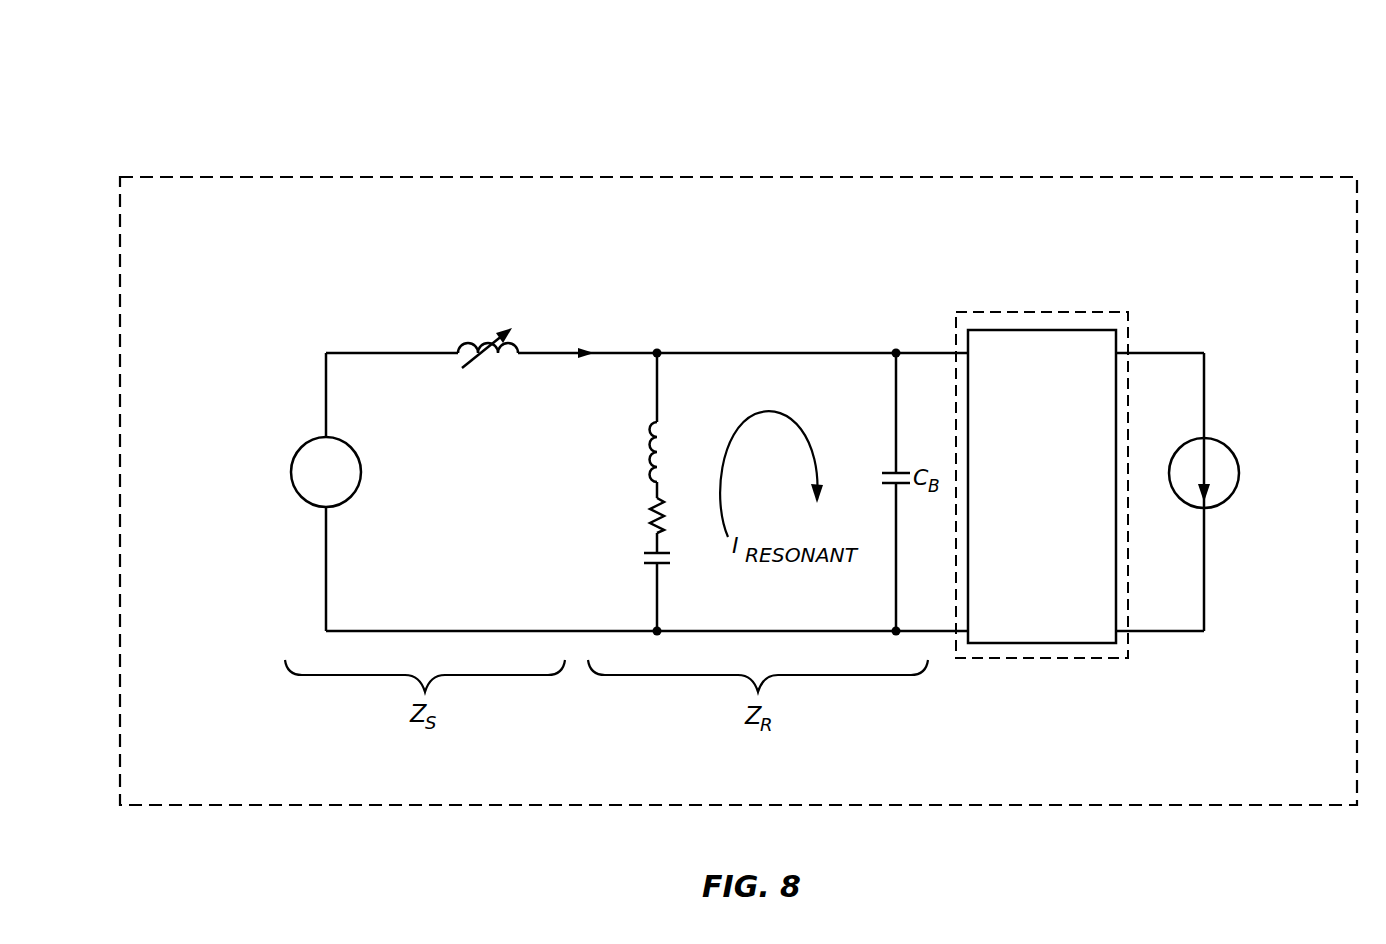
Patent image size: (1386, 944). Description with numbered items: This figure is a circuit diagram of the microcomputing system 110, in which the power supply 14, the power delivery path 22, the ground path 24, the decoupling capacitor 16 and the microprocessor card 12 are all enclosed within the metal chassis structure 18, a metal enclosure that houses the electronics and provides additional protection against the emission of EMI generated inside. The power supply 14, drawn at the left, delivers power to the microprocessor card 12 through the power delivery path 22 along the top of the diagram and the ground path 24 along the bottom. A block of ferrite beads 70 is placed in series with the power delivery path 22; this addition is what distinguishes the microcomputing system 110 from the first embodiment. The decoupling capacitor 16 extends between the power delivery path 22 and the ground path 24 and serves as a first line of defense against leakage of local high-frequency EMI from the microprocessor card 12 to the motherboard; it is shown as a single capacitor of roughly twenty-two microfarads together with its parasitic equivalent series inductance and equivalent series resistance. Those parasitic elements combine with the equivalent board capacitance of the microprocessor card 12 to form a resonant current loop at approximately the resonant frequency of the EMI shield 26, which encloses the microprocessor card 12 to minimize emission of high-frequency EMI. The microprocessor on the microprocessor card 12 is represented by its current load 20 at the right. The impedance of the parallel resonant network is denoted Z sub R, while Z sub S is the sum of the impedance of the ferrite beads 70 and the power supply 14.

The microcomputing system 110 is at (1033, 69).
The chassis structure 18 is at (738, 470).
The power supply 14 is at (297, 492).
The power delivery path 22 is at (647, 356).
The ferrite beads 70 is at (454, 329).
The decoupling capacitor 16 is at (632, 492).
The ground path 24 is at (647, 612).
The EMI shield 26 is at (1042, 464).
The microprocessor card 12 is at (1046, 500).
The current load 20 is at (1212, 492).